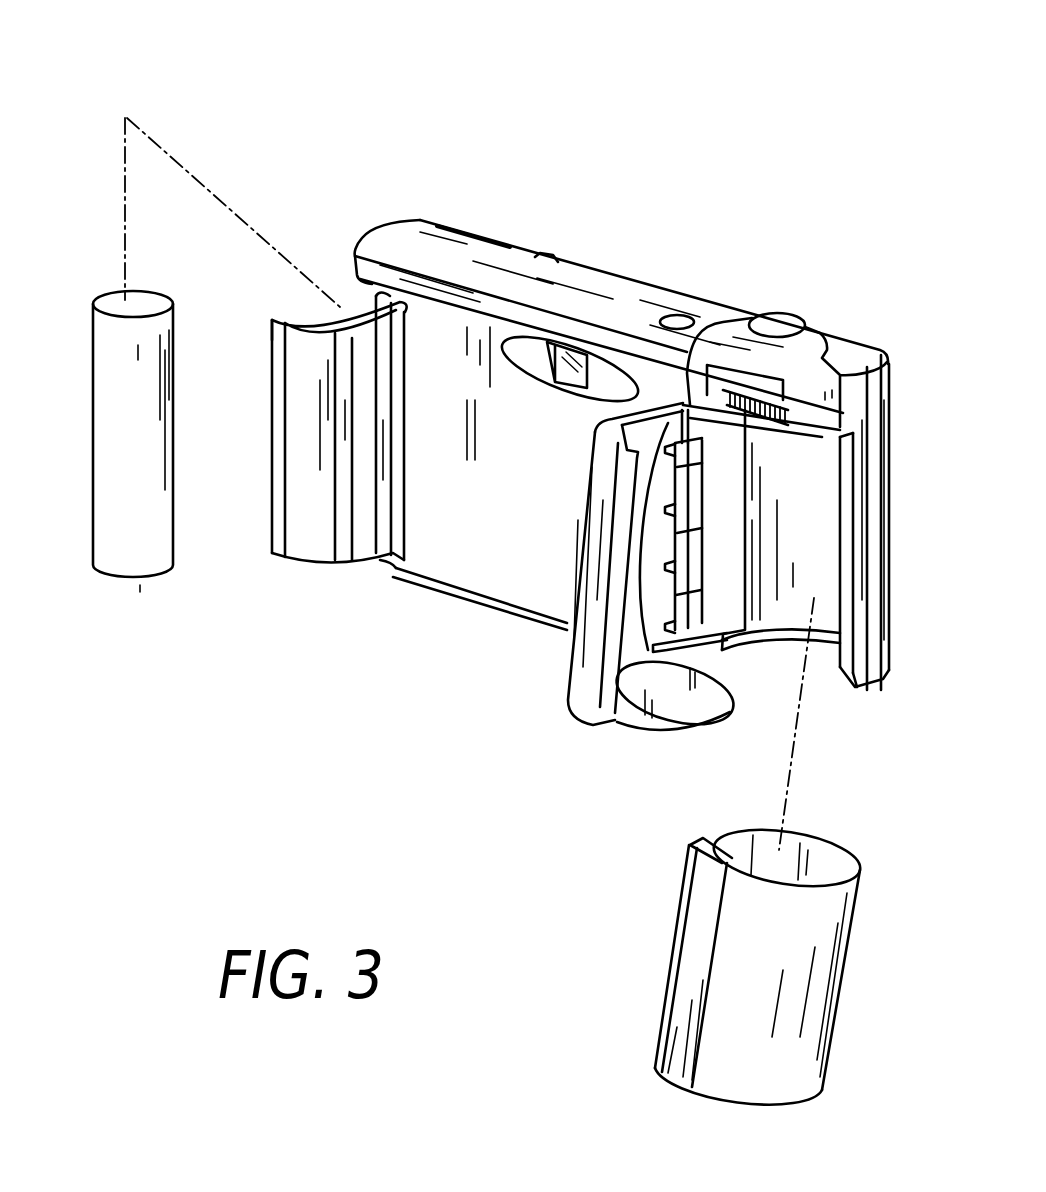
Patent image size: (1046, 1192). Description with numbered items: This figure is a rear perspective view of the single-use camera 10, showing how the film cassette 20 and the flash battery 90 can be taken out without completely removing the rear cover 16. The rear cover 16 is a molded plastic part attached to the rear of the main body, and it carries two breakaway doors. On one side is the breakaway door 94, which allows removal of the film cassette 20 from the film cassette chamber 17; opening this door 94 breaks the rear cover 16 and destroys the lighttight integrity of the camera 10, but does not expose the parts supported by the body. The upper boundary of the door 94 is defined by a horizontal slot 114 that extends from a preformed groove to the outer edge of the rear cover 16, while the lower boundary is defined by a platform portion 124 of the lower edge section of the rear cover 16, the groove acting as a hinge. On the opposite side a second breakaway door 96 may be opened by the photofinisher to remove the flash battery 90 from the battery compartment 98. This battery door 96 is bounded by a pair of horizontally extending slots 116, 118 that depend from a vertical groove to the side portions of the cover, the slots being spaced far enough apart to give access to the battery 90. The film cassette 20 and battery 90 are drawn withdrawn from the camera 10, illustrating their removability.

The single-use camera 10 is at (412, 138).
The rear cover 16 is at (498, 576).
The film cassette chamber 17 is at (823, 570).
The film cassette 20 is at (834, 857).
The battery 90 is at (173, 385).
The breakaway door 94 is at (634, 724).
The second breakaway door 96 is at (310, 543).
The battery compartment 98 is at (322, 305).
The horizontal slot 114 is at (813, 423).
The horizontally extending slot 116 is at (355, 267).
The horizontally extending slot 118 is at (404, 580).
The platform portion 124 is at (683, 728).